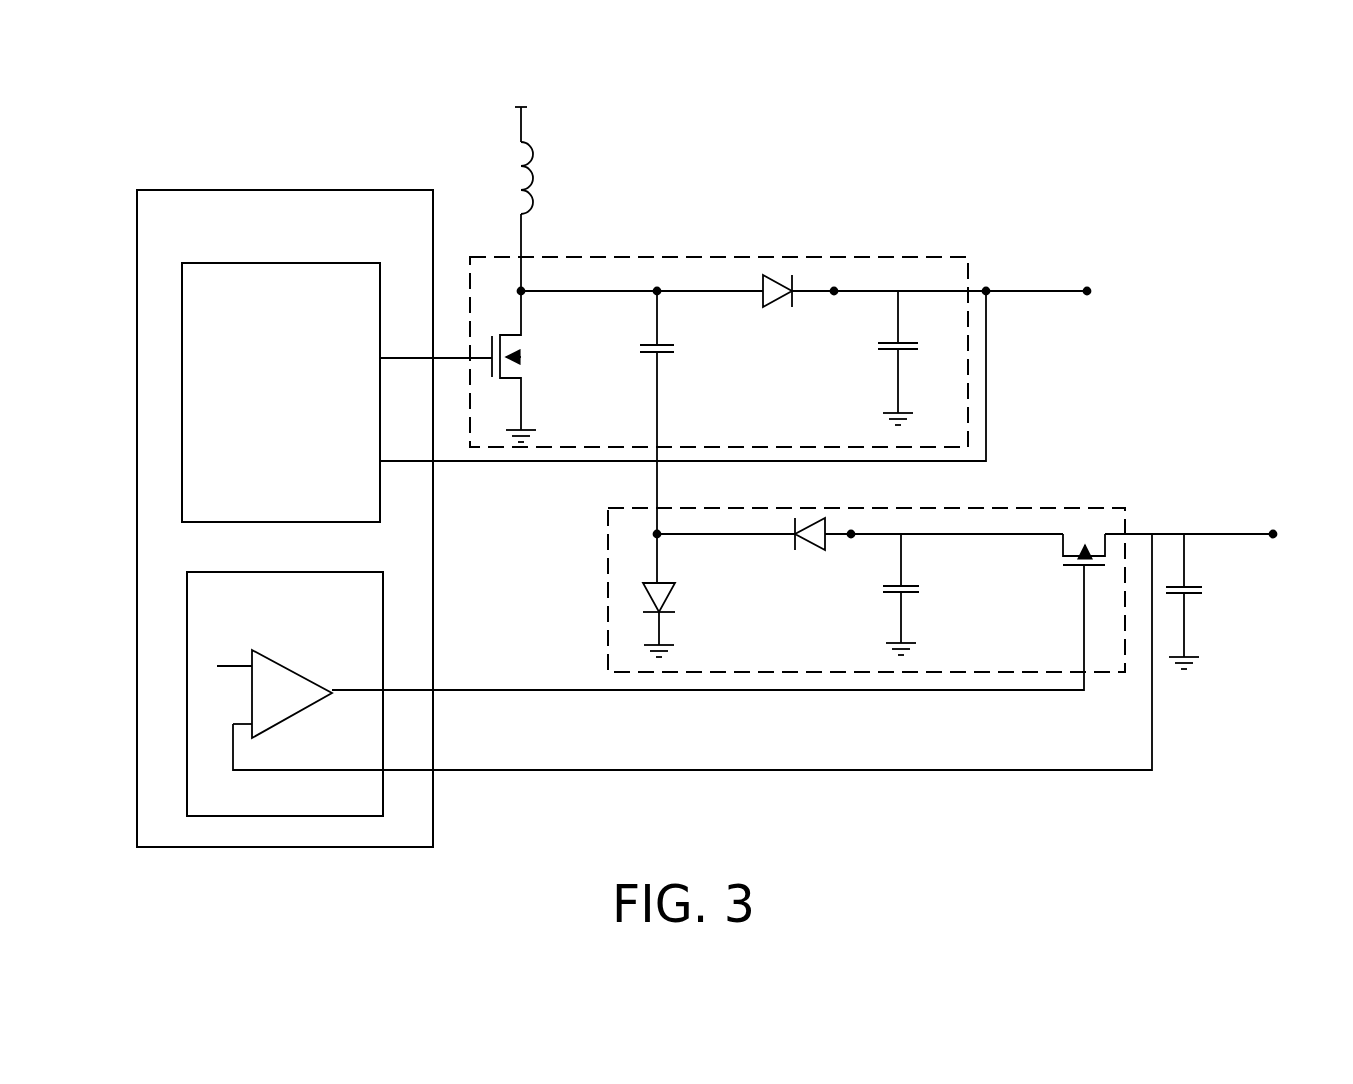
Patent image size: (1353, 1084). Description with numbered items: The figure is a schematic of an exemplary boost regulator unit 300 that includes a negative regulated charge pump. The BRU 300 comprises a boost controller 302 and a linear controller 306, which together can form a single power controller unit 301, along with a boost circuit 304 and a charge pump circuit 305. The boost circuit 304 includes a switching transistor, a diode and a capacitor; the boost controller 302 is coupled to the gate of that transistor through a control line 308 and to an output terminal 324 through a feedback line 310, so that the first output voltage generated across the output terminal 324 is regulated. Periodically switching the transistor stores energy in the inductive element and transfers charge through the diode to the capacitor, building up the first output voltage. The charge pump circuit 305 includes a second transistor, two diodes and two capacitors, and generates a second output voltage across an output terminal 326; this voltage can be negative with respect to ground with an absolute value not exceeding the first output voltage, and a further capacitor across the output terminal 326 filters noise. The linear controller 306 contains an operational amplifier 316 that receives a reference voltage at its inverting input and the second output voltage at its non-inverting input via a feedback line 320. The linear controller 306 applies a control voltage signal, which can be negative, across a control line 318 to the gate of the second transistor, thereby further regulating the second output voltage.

The boost regulator unit 300 is at (184, 87).
The power controller unit 301 is at (215, 186).
The boost controller 302 is at (218, 262).
The boost circuit 304 is at (690, 256).
The charge pump circuit 305 is at (995, 507).
The linear controller 306 is at (218, 572).
The control line 308 is at (409, 360).
The feedback line 310 is at (405, 465).
The operational amplifier 316 is at (305, 677).
The control line 318 is at (408, 693).
The feedback line 320 is at (408, 773).
The output terminal 324 is at (1013, 299).
The output terminal 326 is at (1207, 542).